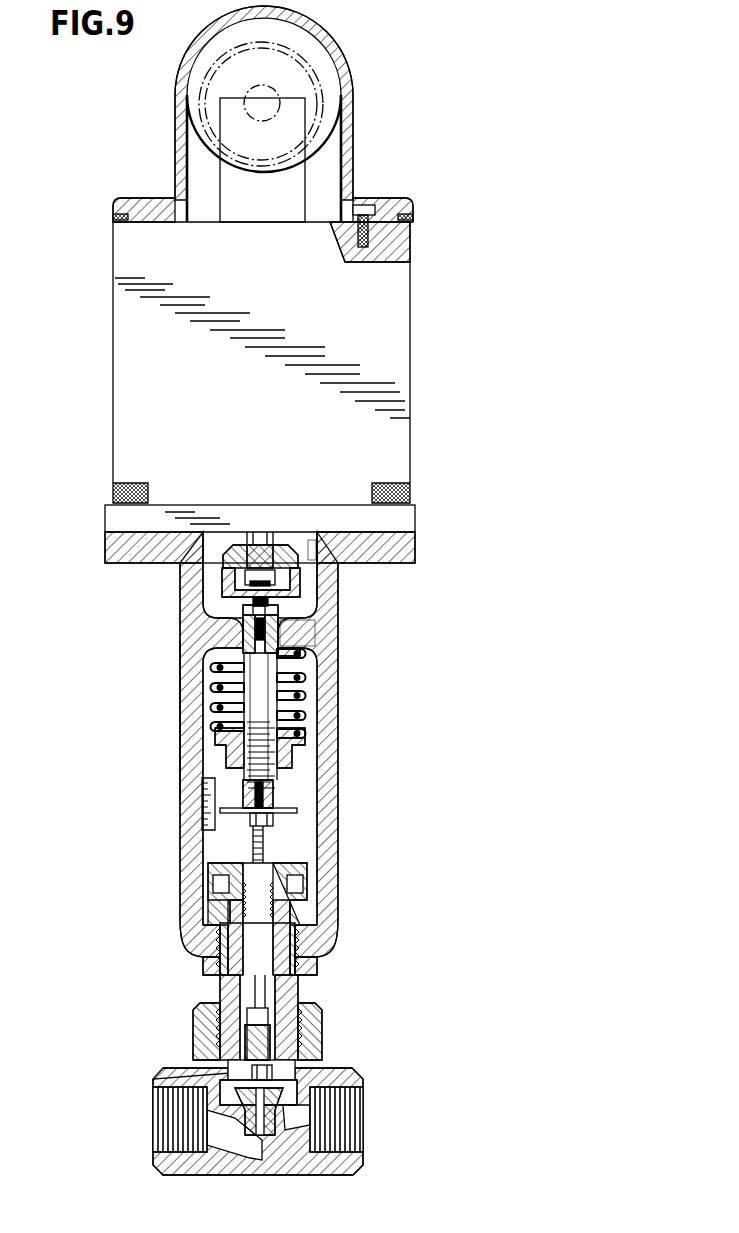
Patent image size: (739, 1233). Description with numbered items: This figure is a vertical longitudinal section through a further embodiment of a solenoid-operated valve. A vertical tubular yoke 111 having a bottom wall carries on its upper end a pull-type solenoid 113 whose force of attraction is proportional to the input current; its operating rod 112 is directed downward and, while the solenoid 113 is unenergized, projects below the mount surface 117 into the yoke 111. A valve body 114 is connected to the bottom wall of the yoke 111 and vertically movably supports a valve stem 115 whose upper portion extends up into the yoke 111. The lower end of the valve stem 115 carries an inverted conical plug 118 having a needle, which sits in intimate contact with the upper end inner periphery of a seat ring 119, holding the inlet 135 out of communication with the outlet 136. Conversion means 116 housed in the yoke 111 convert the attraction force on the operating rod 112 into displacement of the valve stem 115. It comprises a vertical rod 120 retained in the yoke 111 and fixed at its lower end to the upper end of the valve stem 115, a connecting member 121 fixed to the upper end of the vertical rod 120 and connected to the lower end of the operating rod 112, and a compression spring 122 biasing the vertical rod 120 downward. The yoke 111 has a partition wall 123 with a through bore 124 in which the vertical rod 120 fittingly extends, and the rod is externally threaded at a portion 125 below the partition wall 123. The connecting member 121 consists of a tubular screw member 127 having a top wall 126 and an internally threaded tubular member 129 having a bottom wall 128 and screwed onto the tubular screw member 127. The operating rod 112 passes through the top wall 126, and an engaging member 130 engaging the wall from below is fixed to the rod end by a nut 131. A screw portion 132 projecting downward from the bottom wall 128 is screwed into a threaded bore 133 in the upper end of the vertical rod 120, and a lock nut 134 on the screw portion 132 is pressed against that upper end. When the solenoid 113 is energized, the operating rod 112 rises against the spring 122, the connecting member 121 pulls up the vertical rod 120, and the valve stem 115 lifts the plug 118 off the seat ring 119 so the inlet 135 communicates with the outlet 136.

The yoke 111 is at (342, 777).
The operating rod 112 is at (254, 538).
The solenoid 113 is at (398, 334).
The valve body 114 is at (142, 1072).
The valve stem 115 is at (257, 845).
The conversion means 116 is at (208, 718).
The mount surface 117 is at (308, 540).
The plug 118 is at (273, 1075).
The seat ring 119 is at (282, 1093).
The vertical rod 120 is at (255, 683).
The connecting member 121 is at (214, 589).
The compression spring 122 is at (298, 722).
The partition wall 123 is at (290, 630).
The through bore 124 is at (282, 670).
The externally threaded portion 125 is at (255, 768).
The top wall 126 is at (229, 546).
The tubular screw member 127 is at (303, 552).
The bottom wall 128 is at (278, 610).
The internally threaded tubular member 129 is at (303, 590).
The engaging member 130 is at (283, 545).
The nut 131 is at (222, 582).
The screw portion 132 is at (245, 632).
The threaded bore 133 is at (243, 610).
The lock nut 134 is at (287, 637).
The inlet 135 is at (153, 1105).
The outlet 136 is at (363, 1103).